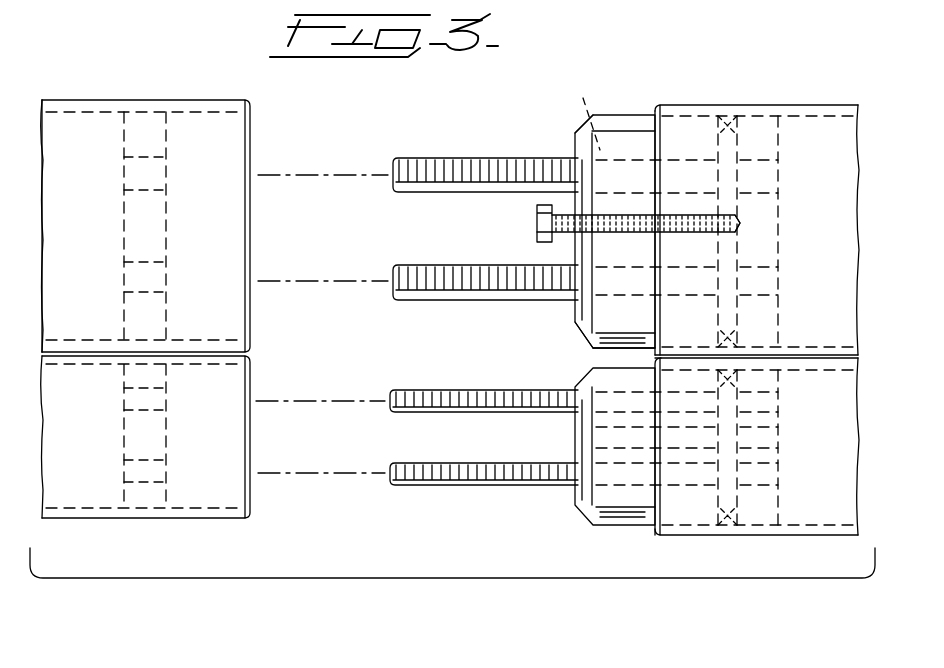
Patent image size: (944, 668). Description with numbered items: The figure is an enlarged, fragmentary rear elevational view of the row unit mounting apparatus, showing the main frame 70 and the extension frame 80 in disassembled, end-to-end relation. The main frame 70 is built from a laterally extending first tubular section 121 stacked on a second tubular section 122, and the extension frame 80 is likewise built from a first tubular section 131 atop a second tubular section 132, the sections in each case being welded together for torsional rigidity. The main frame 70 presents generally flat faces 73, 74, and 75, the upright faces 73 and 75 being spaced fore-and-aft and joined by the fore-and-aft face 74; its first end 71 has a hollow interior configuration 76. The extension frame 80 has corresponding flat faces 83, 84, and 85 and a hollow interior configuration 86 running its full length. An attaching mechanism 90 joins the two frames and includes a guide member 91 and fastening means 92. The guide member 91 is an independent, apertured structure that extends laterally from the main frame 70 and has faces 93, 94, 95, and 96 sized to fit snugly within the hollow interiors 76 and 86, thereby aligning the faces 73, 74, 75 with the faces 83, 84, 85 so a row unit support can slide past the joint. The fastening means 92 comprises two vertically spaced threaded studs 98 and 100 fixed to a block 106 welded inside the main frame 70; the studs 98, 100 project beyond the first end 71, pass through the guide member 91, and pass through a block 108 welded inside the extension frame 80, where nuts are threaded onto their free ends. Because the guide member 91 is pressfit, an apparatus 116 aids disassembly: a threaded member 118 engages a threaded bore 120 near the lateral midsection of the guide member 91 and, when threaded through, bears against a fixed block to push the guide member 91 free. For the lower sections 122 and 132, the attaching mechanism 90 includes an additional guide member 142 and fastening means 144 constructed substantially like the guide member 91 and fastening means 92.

The main frame 70 is at (743, 304).
The first end 71 is at (648, 118).
The flat face 73 is at (834, 130).
The flat face 74 is at (748, 105).
The flat face 75 is at (800, 523).
The hollow interior configuration 76 is at (700, 122).
The extension frame 80 is at (151, 200).
The flat face 83 is at (58, 112).
The flat face 84 is at (170, 112).
The flat face 85 is at (145, 456).
The hollow interior configuration 86 is at (208, 118).
The attaching mechanism 90 is at (636, 213).
The guide member 91 is at (600, 322).
The fastening means 92 is at (478, 218).
The face 93 is at (576, 120).
The face 94 is at (604, 115).
The face 95 is at (585, 298).
The face 96 is at (595, 352).
The threaded stud 98 is at (412, 166).
The threaded stud 100 is at (428, 292).
The block 106 is at (760, 208).
The block 108 is at (136, 232).
The apparatus 116 is at (648, 233).
The threaded member 118 is at (552, 238).
The threaded bore 120 is at (738, 224).
The first tubular section 121 is at (842, 306).
The second tubular section 122 is at (842, 456).
The first tubular section 131 is at (100, 236).
The second tubular section 132 is at (102, 451).
The guide member 142 is at (612, 497).
The fastening means 144 is at (478, 418).